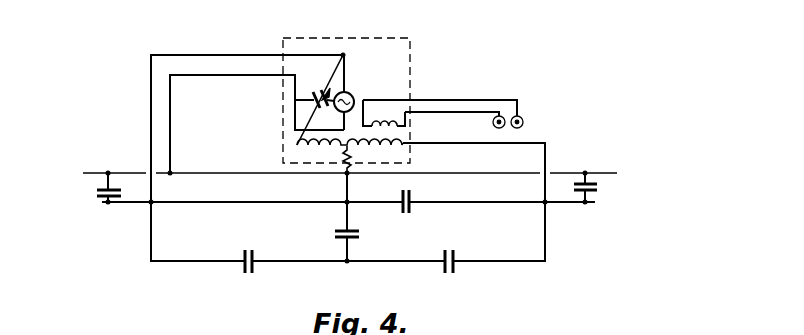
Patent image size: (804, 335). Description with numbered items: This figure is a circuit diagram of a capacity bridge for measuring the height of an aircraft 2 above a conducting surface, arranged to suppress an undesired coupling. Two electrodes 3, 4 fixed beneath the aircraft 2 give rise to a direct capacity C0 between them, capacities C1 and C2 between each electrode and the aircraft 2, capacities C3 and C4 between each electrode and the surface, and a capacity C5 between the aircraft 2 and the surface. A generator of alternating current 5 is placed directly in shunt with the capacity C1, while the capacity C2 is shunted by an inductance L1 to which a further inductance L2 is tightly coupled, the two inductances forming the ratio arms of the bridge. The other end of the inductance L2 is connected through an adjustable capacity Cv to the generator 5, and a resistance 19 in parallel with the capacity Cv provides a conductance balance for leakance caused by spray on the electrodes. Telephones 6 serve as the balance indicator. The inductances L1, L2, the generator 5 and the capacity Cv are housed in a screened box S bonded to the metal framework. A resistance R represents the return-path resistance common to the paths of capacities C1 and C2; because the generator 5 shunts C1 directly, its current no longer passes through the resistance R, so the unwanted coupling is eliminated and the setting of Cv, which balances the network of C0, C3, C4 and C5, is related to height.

The screened box S is at (412, 64).
The generator of alternating current 5 is at (357, 92).
The adjustable capacity Cv is at (326, 96).
The resistance 19 is at (311, 95).
The inductance L2 is at (292, 146).
The resistance R is at (342, 161).
The inductance L1 is at (386, 131).
The telephones 6 is at (520, 115).
The capacity between electrode 3 and the aircraft C1 is at (91, 193).
The electrode 3 is at (121, 209).
The capacity between electrode 4 and the aircraft C2 is at (604, 187).
The aircraft 2 is at (587, 170).
The electrode 4 is at (573, 206).
The capacity between aircraft and the surface C5 is at (328, 236).
The direct capacity between electrodes C0 is at (414, 210).
The capacity between electrode 3 and the surface C3 is at (242, 277).
The capacity between electrode 4 and the surface C4 is at (456, 276).